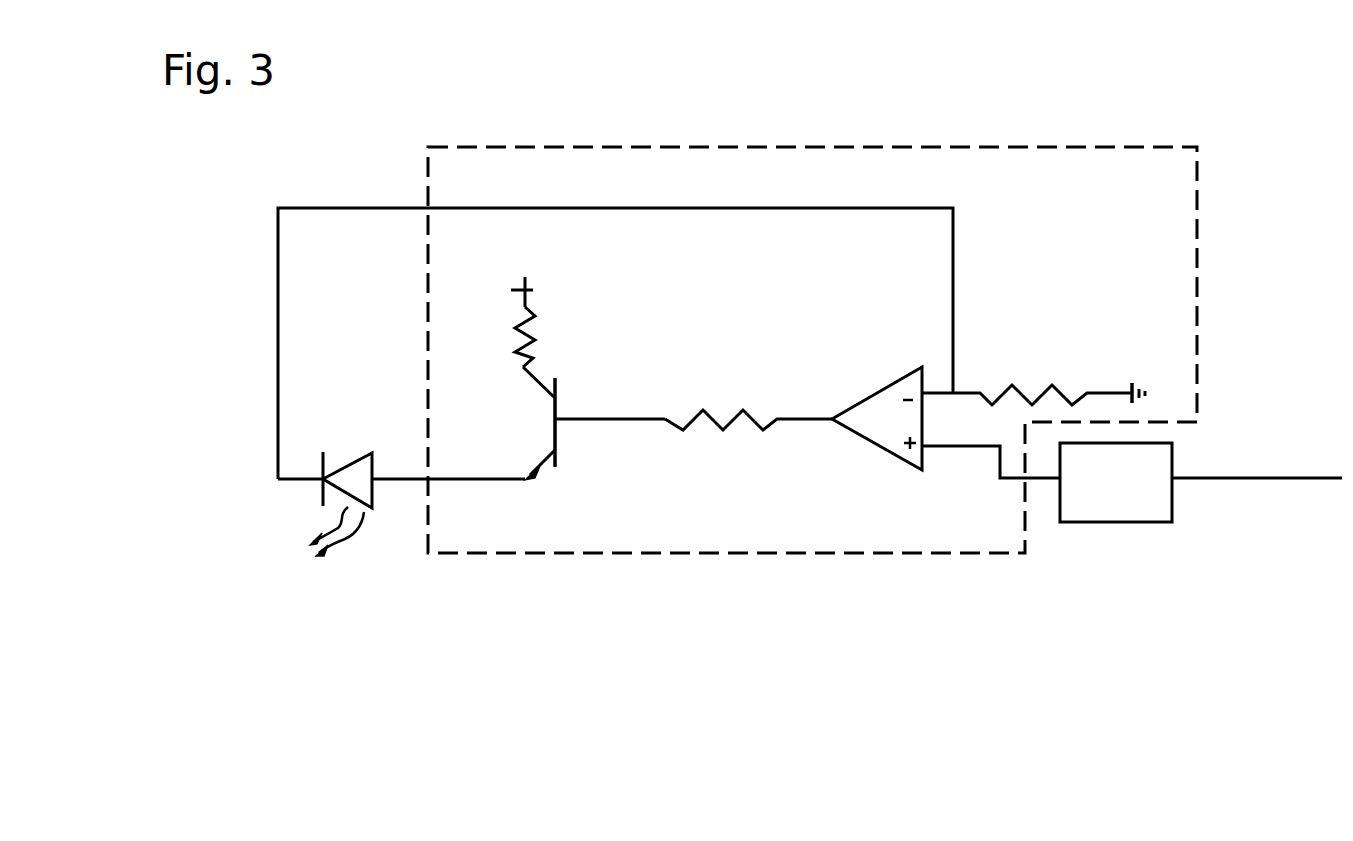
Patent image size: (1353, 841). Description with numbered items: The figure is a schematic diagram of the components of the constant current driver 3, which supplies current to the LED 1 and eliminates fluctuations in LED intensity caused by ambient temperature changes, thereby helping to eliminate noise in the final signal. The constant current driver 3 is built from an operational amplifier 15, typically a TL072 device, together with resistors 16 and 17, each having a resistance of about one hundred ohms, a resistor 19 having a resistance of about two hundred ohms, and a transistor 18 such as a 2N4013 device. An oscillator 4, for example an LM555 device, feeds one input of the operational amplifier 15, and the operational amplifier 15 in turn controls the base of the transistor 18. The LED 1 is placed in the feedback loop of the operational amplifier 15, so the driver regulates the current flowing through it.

The LED 1 is at (367, 478).
The constant current driver 3 is at (603, 575).
The oscillator 4 is at (1160, 498).
The operational amplifier 15 is at (882, 427).
The resistor 16 is at (1020, 390).
The resistor 17 is at (712, 422).
The transistor 18 is at (556, 435).
The resistor 19 is at (527, 358).